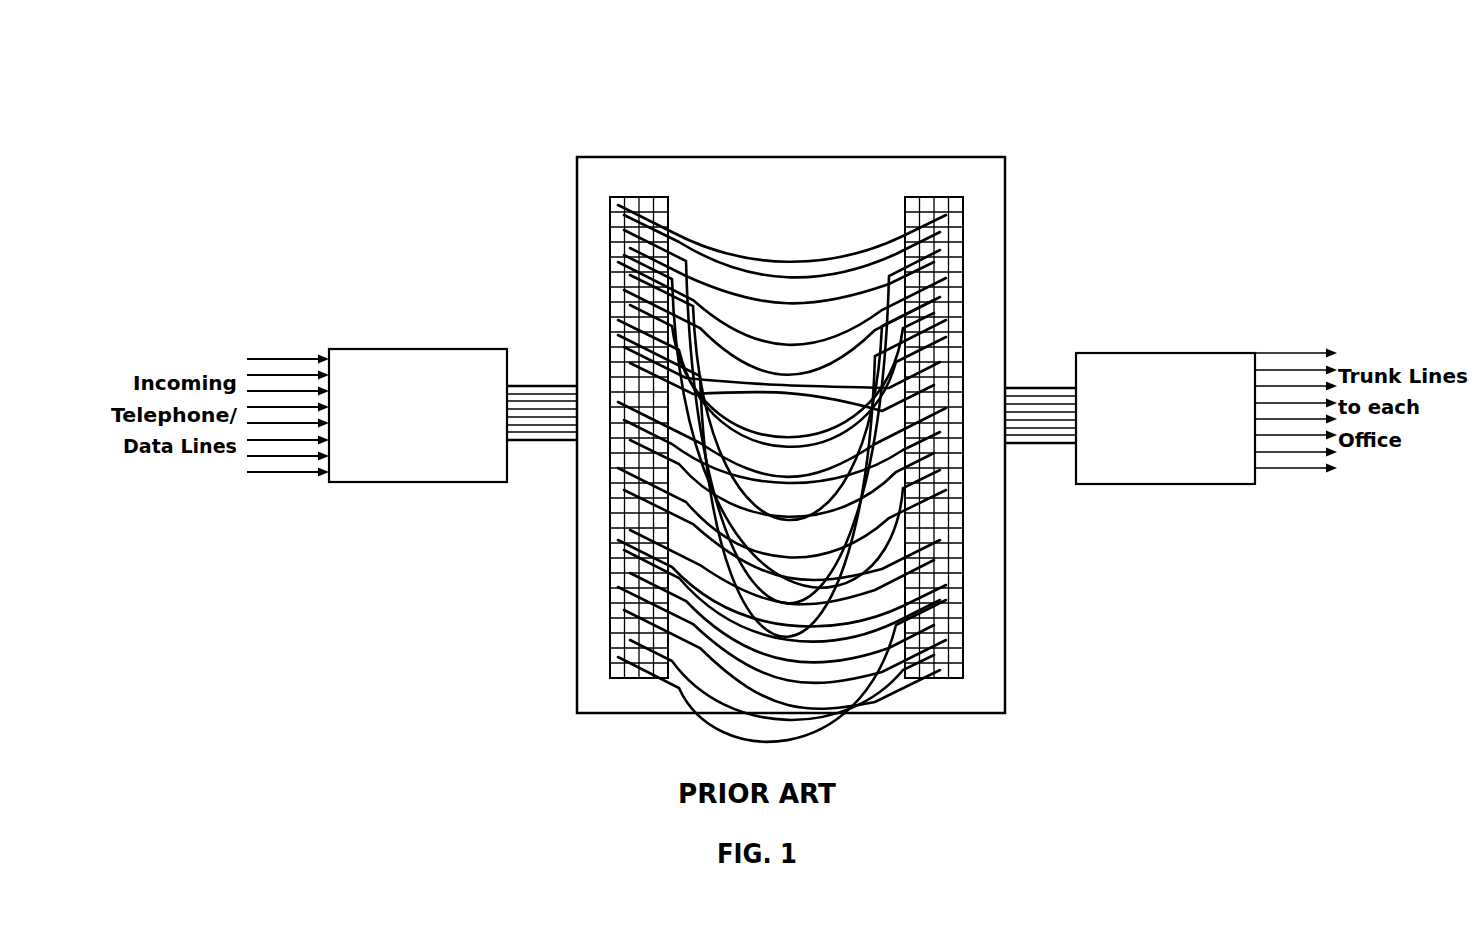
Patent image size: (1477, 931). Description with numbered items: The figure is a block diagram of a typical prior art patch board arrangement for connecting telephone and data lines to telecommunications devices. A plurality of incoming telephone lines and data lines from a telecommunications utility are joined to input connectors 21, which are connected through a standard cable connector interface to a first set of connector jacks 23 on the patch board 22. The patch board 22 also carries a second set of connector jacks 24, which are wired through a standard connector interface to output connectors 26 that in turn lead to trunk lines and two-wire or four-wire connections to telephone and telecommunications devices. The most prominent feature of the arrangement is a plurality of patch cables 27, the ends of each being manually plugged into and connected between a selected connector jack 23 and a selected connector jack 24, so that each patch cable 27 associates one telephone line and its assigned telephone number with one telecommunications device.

The input connectors 21 is at (402, 348).
The patch board 22 is at (662, 157).
The first set of connector jacks 23 is at (605, 207).
The second set of connector jacks 24 is at (943, 197).
The output connectors 26 is at (1152, 485).
The patch cables 27 is at (793, 243).